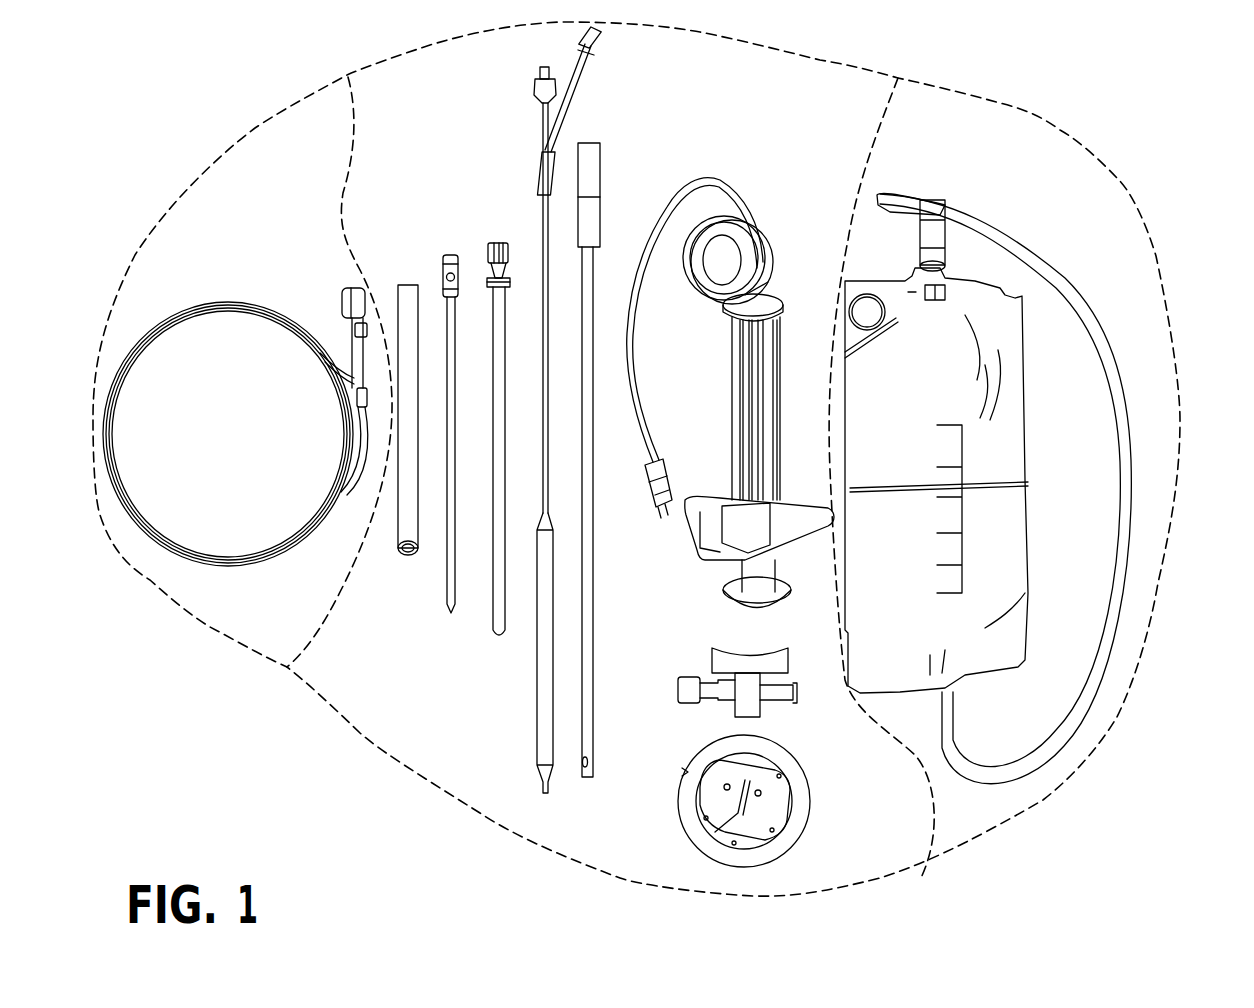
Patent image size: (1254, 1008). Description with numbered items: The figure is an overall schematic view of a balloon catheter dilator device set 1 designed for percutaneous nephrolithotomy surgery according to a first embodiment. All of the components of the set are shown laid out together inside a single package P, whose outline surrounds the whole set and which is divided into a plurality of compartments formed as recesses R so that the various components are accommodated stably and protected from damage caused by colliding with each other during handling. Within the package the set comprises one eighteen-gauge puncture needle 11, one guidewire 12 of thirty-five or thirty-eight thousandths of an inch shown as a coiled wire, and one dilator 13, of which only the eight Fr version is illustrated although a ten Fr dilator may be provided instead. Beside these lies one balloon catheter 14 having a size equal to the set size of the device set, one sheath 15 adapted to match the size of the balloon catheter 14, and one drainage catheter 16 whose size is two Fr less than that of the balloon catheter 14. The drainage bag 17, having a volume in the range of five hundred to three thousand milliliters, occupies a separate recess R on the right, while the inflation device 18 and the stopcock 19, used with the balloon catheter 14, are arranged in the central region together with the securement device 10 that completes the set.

The balloon catheter dilator device set 1 is at (872, 48).
The securement device 10 is at (810, 778).
The puncture needle 11 is at (490, 258).
The guidewire 12 is at (253, 302).
The dilator 13 is at (450, 252).
The balloon catheter 14 is at (543, 258).
The sheath 15 is at (408, 282).
The drainage catheter 16 is at (599, 206).
The drainage bag 17 is at (1003, 212).
The inflation device 18 is at (765, 267).
The stopcock 19 is at (798, 695).
The package P is at (1178, 473).
The recesses R is at (230, 240).